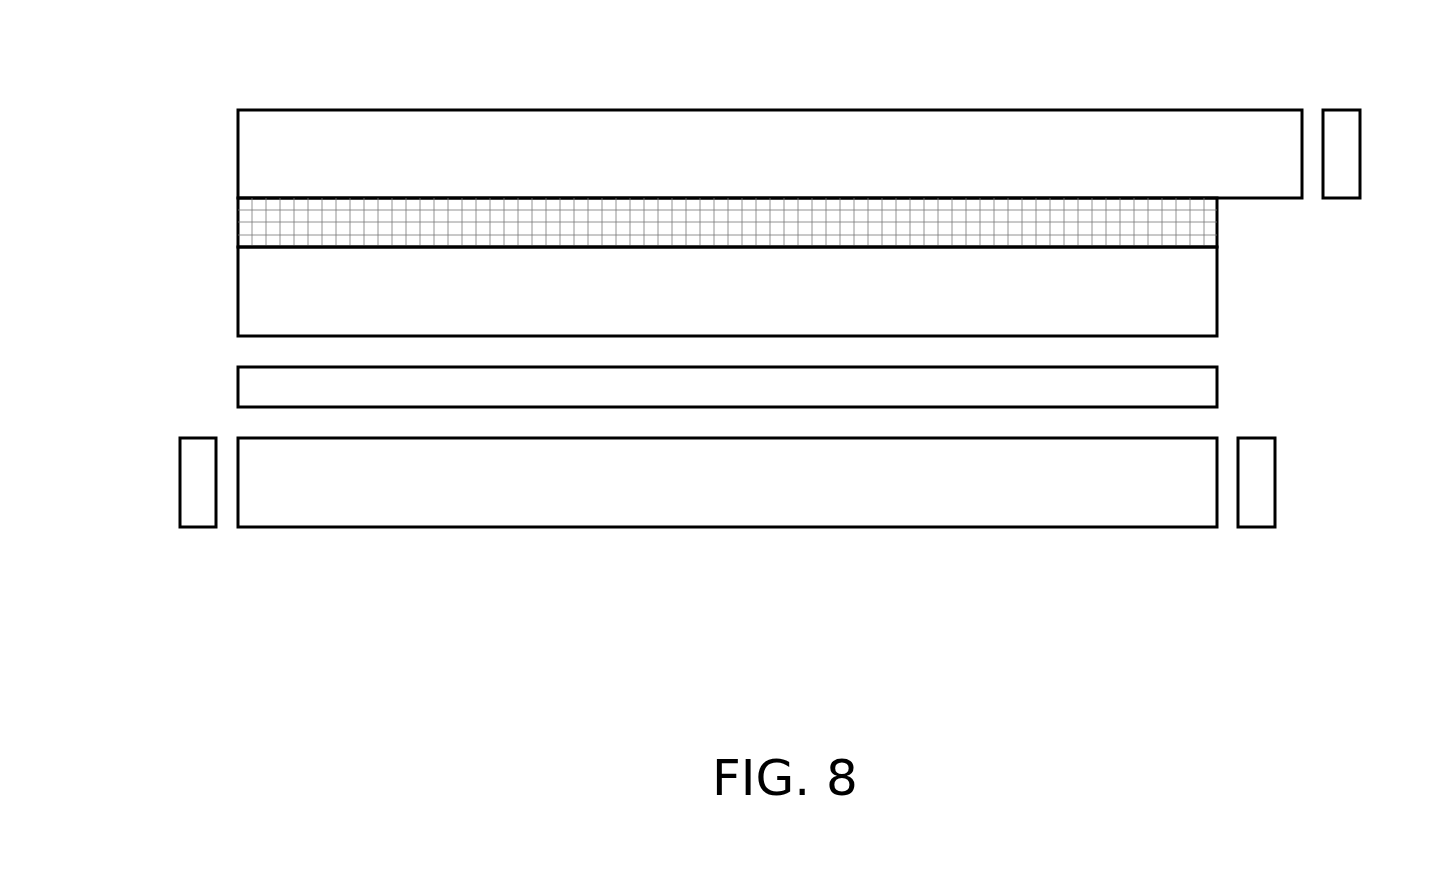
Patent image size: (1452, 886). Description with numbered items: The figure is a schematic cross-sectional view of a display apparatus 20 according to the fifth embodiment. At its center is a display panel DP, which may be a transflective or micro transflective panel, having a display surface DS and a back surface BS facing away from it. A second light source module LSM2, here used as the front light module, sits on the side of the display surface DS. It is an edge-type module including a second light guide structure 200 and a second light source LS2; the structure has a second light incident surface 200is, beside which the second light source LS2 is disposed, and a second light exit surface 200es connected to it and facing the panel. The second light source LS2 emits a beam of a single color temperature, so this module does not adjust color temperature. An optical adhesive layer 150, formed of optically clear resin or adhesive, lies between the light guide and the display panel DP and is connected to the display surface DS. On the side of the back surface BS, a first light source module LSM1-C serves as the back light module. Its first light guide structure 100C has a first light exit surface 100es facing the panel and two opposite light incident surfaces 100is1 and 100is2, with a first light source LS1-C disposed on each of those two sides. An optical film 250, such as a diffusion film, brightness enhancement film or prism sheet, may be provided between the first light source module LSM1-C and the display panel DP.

The second light guide structure 200 is at (675, 148).
The optical adhesive layer 150 is at (803, 222).
The second light incident surface 200is is at (1306, 145).
The second light source LS2 is at (1343, 157).
The second light source module LSM2 is at (232, 110).
The second light exit surface 200es is at (287, 202).
The display surface DS is at (1176, 243).
The display panel DP is at (1178, 298).
The back surface BS is at (1176, 340).
The first light exit surface 100es is at (322, 436).
The optical film 250 is at (270, 391).
The first light source LS1-C is at (200, 460).
The first light source module LSM1-C is at (172, 438).
The light incident surface 100is1 is at (234, 493).
The first light guide structure 100C is at (725, 480).
The light incident surface 100is2 is at (1221, 493).
The display apparatus 20 is at (1403, 663).